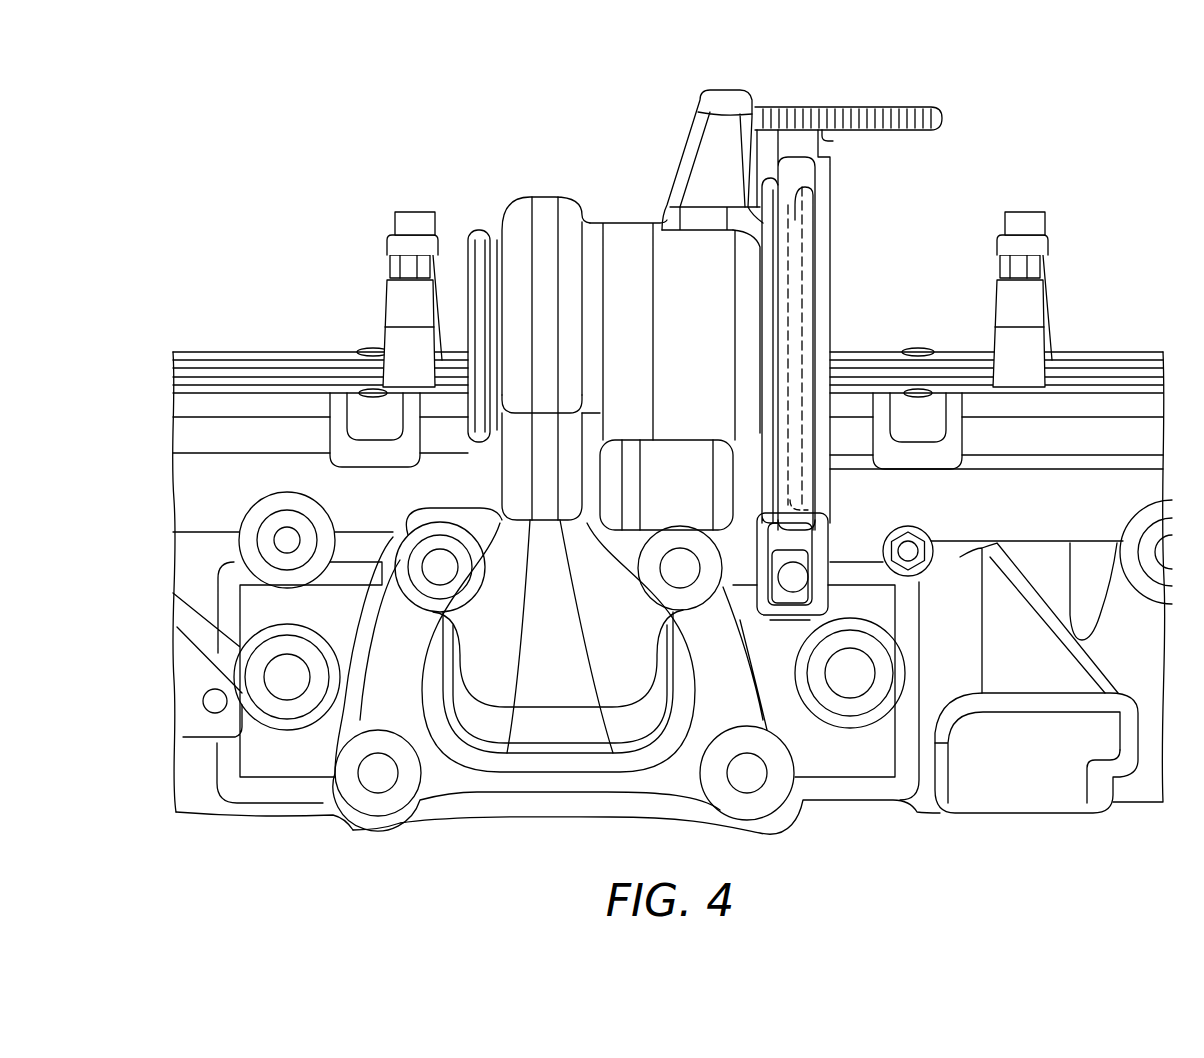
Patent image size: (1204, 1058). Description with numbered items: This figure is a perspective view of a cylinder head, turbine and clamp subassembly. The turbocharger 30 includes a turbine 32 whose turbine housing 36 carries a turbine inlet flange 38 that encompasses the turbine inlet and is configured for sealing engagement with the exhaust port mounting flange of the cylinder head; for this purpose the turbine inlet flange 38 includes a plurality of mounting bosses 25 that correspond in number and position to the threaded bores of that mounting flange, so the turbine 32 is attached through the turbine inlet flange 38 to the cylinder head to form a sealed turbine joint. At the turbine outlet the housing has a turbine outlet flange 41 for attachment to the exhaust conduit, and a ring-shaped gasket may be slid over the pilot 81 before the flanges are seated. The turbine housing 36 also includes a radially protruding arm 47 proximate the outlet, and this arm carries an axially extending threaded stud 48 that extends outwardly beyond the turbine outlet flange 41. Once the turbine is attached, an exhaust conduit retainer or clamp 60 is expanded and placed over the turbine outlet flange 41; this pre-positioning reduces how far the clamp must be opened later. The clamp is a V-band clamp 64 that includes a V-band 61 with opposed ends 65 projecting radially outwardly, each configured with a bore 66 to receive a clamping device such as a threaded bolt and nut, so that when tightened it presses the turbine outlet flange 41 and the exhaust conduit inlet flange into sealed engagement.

The mounting bosses 25 is at (750, 780).
The turbocharger 30 is at (474, 219).
The turbine 32 is at (534, 189).
The turbine housing 36 is at (620, 233).
The turbine inlet flange 38 is at (453, 780).
The turbine outlet flange 41 is at (797, 508).
The radially protruding arm 47 is at (730, 88).
The threaded stud 48 is at (857, 108).
The clamp 60 is at (840, 162).
The V-band 61 is at (802, 295).
The V-band clamp 64 is at (817, 184).
The opposed ends 65 is at (813, 583).
The bore 66 is at (793, 577).
The pilot 81 is at (825, 243).